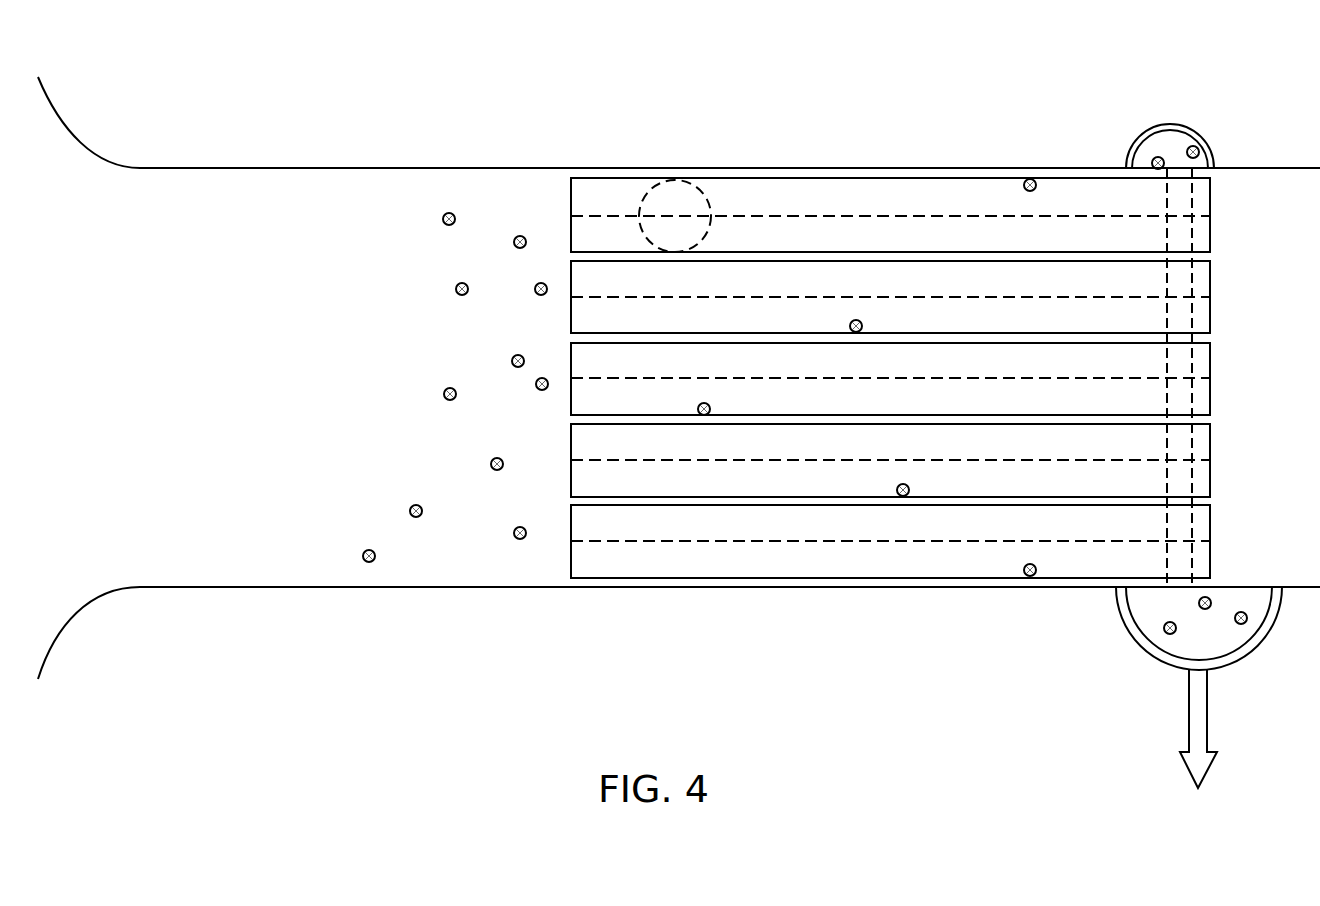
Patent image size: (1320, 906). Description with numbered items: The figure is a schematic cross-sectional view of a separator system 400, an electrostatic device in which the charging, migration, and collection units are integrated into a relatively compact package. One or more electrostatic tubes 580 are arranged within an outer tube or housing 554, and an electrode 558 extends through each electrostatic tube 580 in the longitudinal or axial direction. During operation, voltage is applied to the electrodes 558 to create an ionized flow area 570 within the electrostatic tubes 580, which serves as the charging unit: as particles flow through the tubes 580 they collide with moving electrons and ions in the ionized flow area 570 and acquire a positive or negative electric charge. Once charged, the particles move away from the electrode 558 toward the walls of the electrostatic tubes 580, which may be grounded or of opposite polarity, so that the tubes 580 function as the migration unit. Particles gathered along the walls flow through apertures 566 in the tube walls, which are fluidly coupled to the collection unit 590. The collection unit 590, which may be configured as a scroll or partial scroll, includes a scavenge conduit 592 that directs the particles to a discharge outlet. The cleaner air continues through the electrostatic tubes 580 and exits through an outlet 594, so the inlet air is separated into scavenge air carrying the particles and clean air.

The separator system 400 is at (848, 85).
The outer tube or housing 554 is at (265, 589).
The electrode 558 is at (863, 545).
The apertures 566 is at (1193, 240).
The ionized flow area 570 is at (673, 187).
The electrostatic tubes 580 is at (667, 580).
The collection unit 590 is at (1178, 125).
The scavenge conduit 592 is at (1217, 637).
The outlet 594 is at (1310, 331).